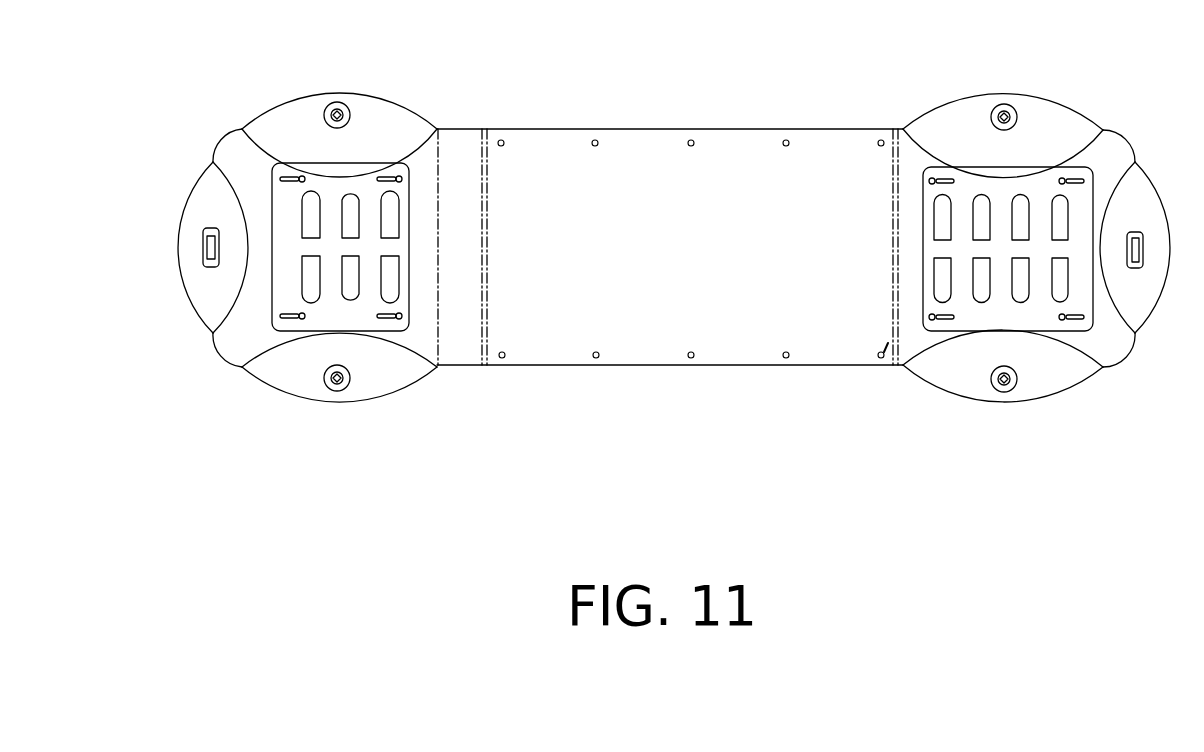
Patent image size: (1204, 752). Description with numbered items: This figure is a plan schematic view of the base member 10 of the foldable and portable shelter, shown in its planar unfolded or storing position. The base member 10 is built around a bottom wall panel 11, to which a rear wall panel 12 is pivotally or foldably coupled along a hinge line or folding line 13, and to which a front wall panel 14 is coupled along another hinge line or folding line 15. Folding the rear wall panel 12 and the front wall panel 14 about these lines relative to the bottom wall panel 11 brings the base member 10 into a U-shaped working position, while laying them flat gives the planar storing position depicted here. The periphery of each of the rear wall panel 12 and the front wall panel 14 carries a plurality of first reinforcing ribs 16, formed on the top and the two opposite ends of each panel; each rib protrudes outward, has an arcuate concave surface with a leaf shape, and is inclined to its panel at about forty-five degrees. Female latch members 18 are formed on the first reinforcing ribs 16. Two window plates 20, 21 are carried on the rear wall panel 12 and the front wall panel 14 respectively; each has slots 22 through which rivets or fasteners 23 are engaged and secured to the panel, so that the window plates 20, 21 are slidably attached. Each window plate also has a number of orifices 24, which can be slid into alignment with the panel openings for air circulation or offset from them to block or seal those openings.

The base member 10 is at (755, 380).
The bottom wall panel 11 is at (710, 143).
The rear wall panel 12 is at (237, 147).
The hinge line 13 is at (498, 374).
The front wall panel 14 is at (1110, 138).
The hinge line 15 is at (894, 382).
The first reinforcing ribs 16 is at (1077, 375).
The latch members 18 is at (333, 380).
The window plate 20 is at (405, 190).
The window plate 21 is at (928, 205).
The slots 22 is at (1070, 320).
The rivets or fasteners 23 is at (1062, 181).
The orifices 24 is at (394, 292).